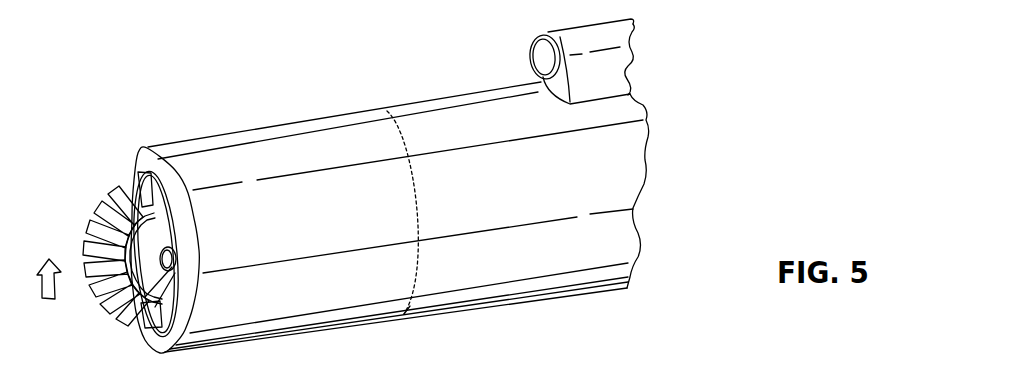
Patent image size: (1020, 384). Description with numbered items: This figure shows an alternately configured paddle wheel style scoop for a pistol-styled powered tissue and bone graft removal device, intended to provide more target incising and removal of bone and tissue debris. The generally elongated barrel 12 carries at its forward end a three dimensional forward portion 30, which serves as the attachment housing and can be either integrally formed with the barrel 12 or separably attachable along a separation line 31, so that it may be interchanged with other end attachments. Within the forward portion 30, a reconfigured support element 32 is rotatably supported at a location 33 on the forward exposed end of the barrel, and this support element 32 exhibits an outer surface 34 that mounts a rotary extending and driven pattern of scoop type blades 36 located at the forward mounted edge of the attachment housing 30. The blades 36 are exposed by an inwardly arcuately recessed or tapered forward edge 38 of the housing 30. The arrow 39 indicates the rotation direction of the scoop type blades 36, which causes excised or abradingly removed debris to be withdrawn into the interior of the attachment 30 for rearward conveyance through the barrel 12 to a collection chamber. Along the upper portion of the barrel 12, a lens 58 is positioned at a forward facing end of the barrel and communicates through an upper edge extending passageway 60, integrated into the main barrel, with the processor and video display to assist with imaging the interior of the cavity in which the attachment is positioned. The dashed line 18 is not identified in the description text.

The barrel 12 is at (470, 308).
The section line 18 is at (413, 163).
The forward portion 30 is at (342, 318).
The separation line 31 is at (407, 291).
The support element 32 is at (165, 232).
The rotatable support location 33 is at (162, 270).
The outer surface 34 is at (107, 216).
The scoop type blades 36 is at (113, 186).
The forward edge 38 is at (187, 277).
The arrow 39 is at (45, 290).
The lens 58 is at (539, 68).
The upper edge extending passageway 60 is at (626, 68).